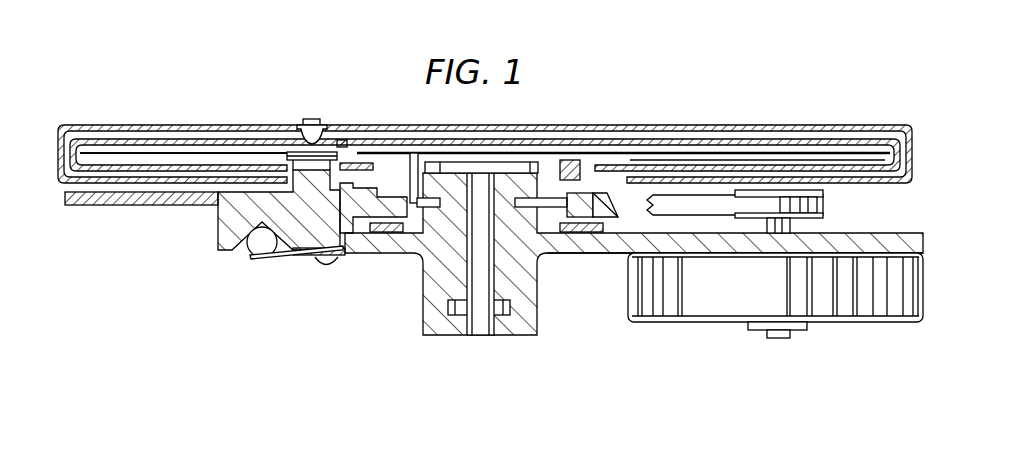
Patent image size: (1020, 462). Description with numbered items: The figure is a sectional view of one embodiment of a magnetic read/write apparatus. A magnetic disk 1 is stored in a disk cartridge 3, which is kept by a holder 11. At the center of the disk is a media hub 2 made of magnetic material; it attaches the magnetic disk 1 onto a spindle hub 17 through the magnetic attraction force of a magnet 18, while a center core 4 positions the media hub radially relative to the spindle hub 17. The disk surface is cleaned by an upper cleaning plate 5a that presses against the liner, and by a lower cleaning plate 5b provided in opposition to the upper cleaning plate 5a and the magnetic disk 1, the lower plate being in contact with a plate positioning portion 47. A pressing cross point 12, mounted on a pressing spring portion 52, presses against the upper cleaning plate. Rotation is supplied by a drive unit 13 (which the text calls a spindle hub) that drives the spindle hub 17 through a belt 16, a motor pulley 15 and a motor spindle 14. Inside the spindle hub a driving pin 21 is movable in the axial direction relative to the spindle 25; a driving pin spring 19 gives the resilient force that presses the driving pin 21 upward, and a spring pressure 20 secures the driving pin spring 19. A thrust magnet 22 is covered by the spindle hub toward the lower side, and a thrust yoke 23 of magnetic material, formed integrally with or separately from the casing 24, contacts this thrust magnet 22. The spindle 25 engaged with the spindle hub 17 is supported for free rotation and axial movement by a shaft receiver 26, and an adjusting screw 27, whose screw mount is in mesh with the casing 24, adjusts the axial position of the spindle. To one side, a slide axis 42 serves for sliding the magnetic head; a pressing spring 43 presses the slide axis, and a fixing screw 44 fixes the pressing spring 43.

The magnetic disk 1 is at (153, 152).
The media hub 2 is at (378, 152).
The disk cartridge 3 is at (107, 140).
The center core 4 is at (410, 160).
The upper cleaning plate 5a is at (305, 124).
The lower cleaning plate 5b is at (290, 150).
The holder 11 is at (57, 128).
The pressing cross point 12 is at (318, 119).
The motor 13 is at (850, 310).
The motor spindle 14 is at (785, 228).
The motor pulley 15 is at (818, 194).
The belt 16 is at (695, 200).
The spindle hub 17 is at (598, 190).
The magnet 18 is at (530, 162).
The driving pin spring 19 is at (420, 207).
The spring pressure 20 is at (558, 165).
The driving pin 21 is at (440, 150).
The thrust magnet 22 is at (392, 233).
The thrust yoke 23 is at (580, 234).
The casing 24 is at (108, 205).
The spindle 25 is at (470, 280).
The shaft receiver 26 is at (505, 282).
The adjusting screw 27 is at (470, 336).
The slide axis 42 is at (255, 256).
The pressing spring 43 is at (283, 260).
The fixing screw 44 is at (325, 262).
The plate positioning portion 47 is at (313, 175).
The pressing spring portion 52 is at (331, 121).